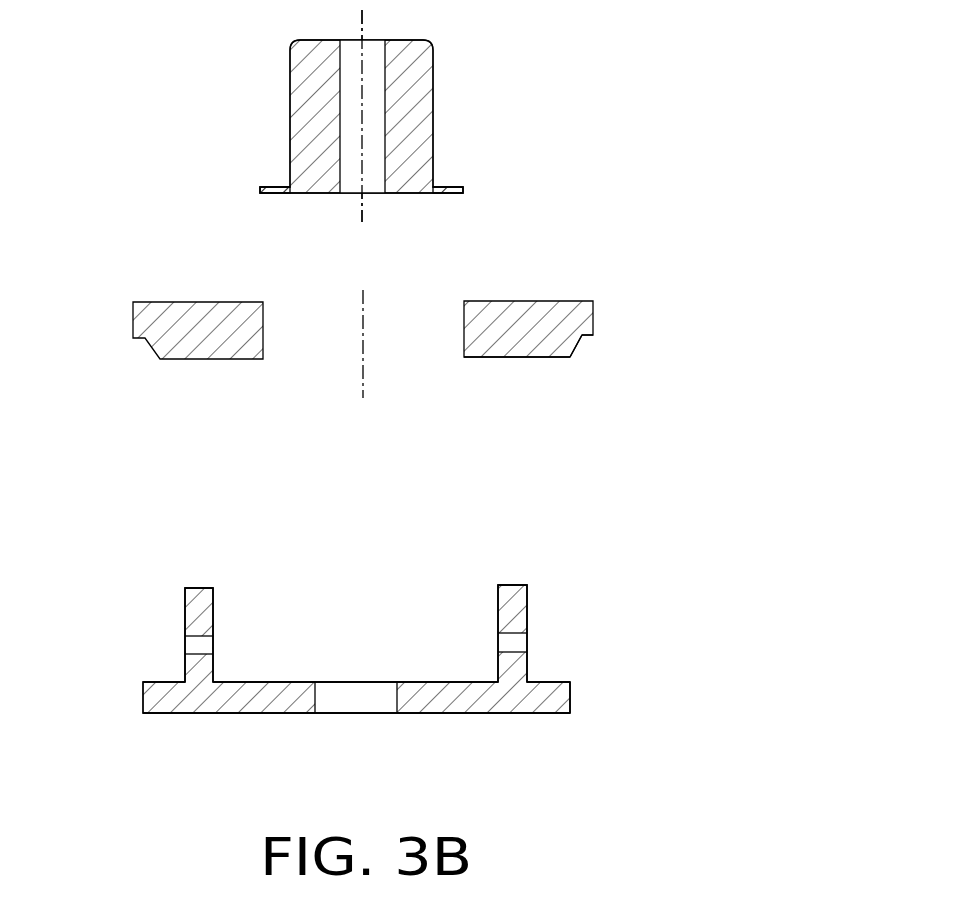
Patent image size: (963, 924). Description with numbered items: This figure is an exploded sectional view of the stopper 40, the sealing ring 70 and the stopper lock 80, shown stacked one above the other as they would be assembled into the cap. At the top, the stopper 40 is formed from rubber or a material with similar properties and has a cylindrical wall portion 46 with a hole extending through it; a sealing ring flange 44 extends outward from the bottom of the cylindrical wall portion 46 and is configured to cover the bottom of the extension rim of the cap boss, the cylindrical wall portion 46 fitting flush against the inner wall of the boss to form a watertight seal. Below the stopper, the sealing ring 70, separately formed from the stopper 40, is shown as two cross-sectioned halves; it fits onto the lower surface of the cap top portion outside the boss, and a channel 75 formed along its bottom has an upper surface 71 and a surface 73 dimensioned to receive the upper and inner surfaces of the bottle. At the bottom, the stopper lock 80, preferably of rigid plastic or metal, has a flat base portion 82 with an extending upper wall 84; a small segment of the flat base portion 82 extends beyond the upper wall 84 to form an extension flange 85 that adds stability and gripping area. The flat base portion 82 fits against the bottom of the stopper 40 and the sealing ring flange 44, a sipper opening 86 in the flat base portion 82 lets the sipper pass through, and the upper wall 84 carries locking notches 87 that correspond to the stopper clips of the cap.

The stopper 40 is at (443, 116).
The sealing ring flange 44 is at (277, 187).
The cylindrical wall portion 46 is at (423, 72).
The sealing ring 70 is at (458, 339).
The upper surface 71 is at (592, 337).
The bottom surface 73 is at (560, 357).
The channel 75 is at (580, 337).
The stopper lock 80 is at (415, 682).
The flat base portion 82 is at (443, 703).
The upper wall 84 is at (518, 603).
The extension flange 85 is at (570, 713).
The sipper opening 86 is at (348, 713).
The locking notches 87 is at (192, 643).